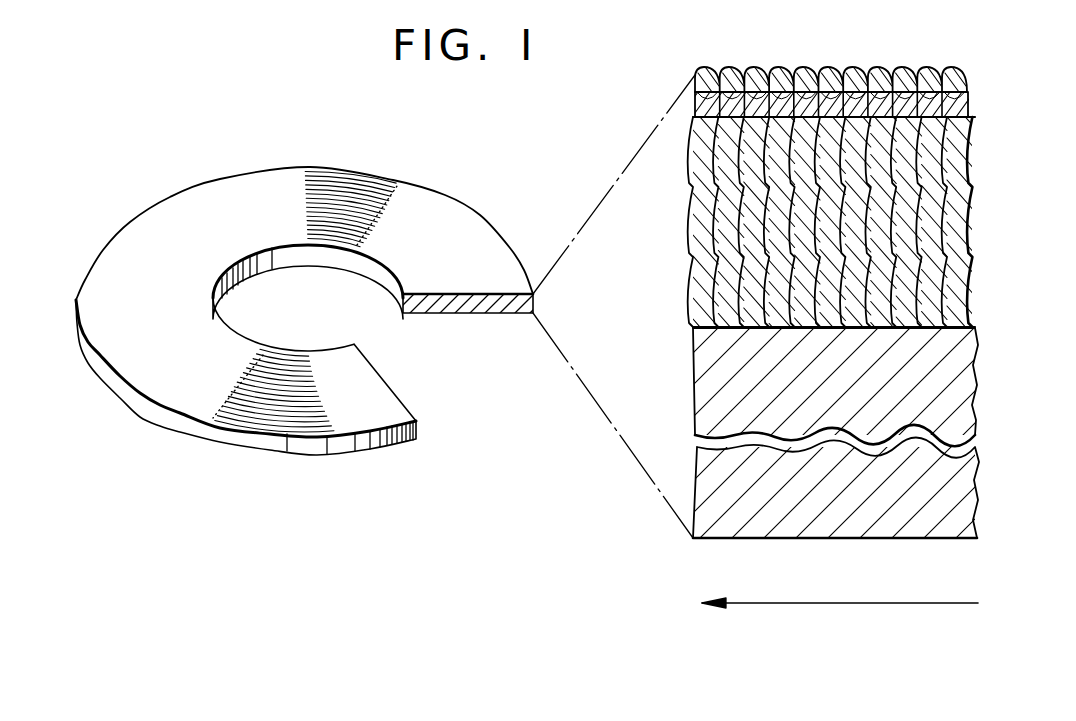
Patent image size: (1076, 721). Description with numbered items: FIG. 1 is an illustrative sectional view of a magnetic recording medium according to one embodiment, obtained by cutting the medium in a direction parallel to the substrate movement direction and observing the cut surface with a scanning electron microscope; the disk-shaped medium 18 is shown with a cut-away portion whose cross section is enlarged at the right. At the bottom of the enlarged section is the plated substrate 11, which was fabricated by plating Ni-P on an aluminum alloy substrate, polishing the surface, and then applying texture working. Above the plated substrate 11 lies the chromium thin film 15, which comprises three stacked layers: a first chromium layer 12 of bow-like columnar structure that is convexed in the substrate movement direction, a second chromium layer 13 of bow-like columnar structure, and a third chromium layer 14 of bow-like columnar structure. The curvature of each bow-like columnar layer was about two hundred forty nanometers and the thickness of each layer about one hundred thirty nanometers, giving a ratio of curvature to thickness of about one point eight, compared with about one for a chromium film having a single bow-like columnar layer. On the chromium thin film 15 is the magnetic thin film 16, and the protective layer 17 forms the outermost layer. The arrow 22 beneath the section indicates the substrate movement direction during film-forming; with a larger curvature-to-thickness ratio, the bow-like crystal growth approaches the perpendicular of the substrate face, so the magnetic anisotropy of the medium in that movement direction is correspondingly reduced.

The plated substrate 11 is at (962, 407).
The first chromium layer 12 is at (950, 298).
The second chromium layer 13 is at (953, 233).
The third chromium layer 14 is at (955, 156).
The chromium thin film 15 is at (1023, 117).
The magnetic thin film 16 is at (953, 98).
The protective layer 17 is at (965, 76).
The magnetic disk 18 is at (193, 403).
The arrow 22 is at (881, 604).